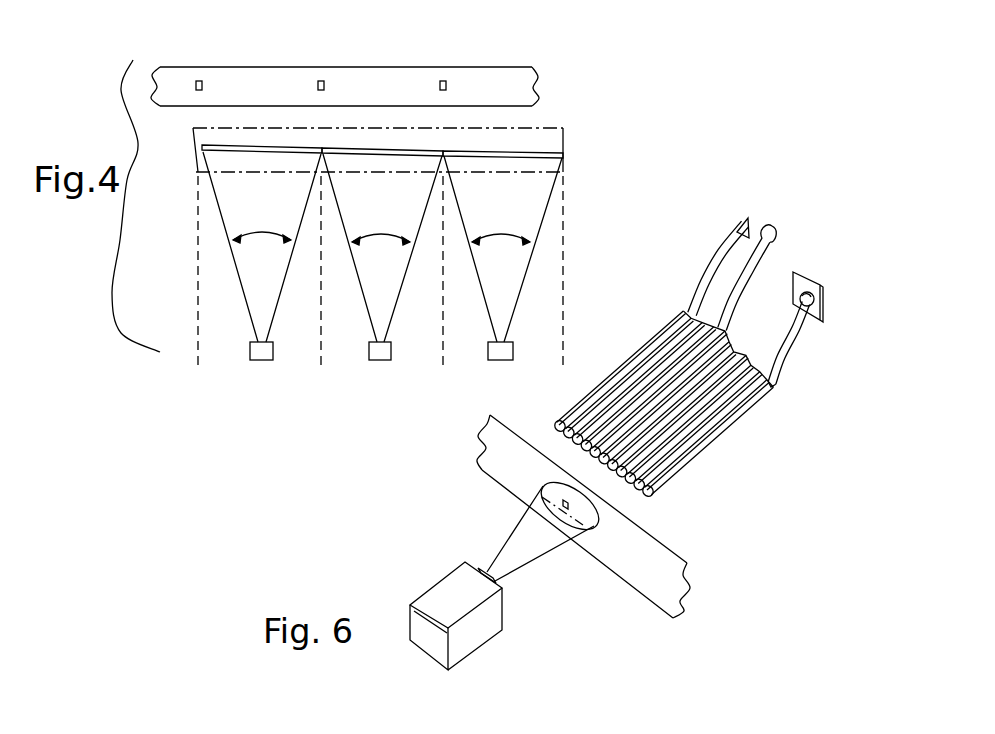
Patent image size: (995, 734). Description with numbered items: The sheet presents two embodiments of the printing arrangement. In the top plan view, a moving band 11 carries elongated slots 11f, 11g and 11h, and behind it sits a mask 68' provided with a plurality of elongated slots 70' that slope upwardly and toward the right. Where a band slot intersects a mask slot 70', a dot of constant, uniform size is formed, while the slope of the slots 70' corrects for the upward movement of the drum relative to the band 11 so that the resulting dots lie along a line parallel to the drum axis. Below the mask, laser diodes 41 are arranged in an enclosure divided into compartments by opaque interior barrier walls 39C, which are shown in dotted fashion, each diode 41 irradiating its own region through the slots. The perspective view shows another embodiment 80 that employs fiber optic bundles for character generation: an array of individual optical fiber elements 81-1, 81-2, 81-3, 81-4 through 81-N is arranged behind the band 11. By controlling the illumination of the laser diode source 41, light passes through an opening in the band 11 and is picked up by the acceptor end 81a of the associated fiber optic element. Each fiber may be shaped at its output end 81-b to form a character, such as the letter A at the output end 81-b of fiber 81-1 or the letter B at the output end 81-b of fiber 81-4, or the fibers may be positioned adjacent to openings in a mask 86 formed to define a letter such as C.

In FIG. 4, the band 11 is at (503, 66).
In FIG. 6, the band 11 is at (657, 538).
In FIG. 4, the elongated slot in band 11f is at (197, 84).
In FIG. 4, the elongated slot in band 11g is at (318, 84).
In FIG. 4, the elongated slot in band 11h is at (447, 84).
In FIG. 4, the mask 68' is at (405, 127).
In FIG. 4, the elongated slot in mask 70' is at (382, 171).
In FIG. 4, the opaque interior barrier wall 39C is at (198, 258).
In FIG. 4, the laser diode 41 is at (257, 360).
In FIG. 6, the laser diode 41 is at (437, 588).
In FIG. 6, the embodiment employing fiber optic bundles 80 is at (675, 405).
In FIG. 6, the optical fiber element 81-1 is at (654, 346).
In FIG. 6, the optical fiber element 81-2 is at (676, 342).
In FIG. 6, the optical fiber element 81-3 is at (778, 367).
In FIG. 6, the optical fiber element 81-4 is at (732, 303).
In FIG. 6, the optical fiber element 81-N is at (710, 435).
In FIG. 6, the acceptor end 81a is at (556, 424).
In FIG. 6, the output end 81-b is at (738, 227).
In FIG. 6, the mask 86 is at (815, 318).